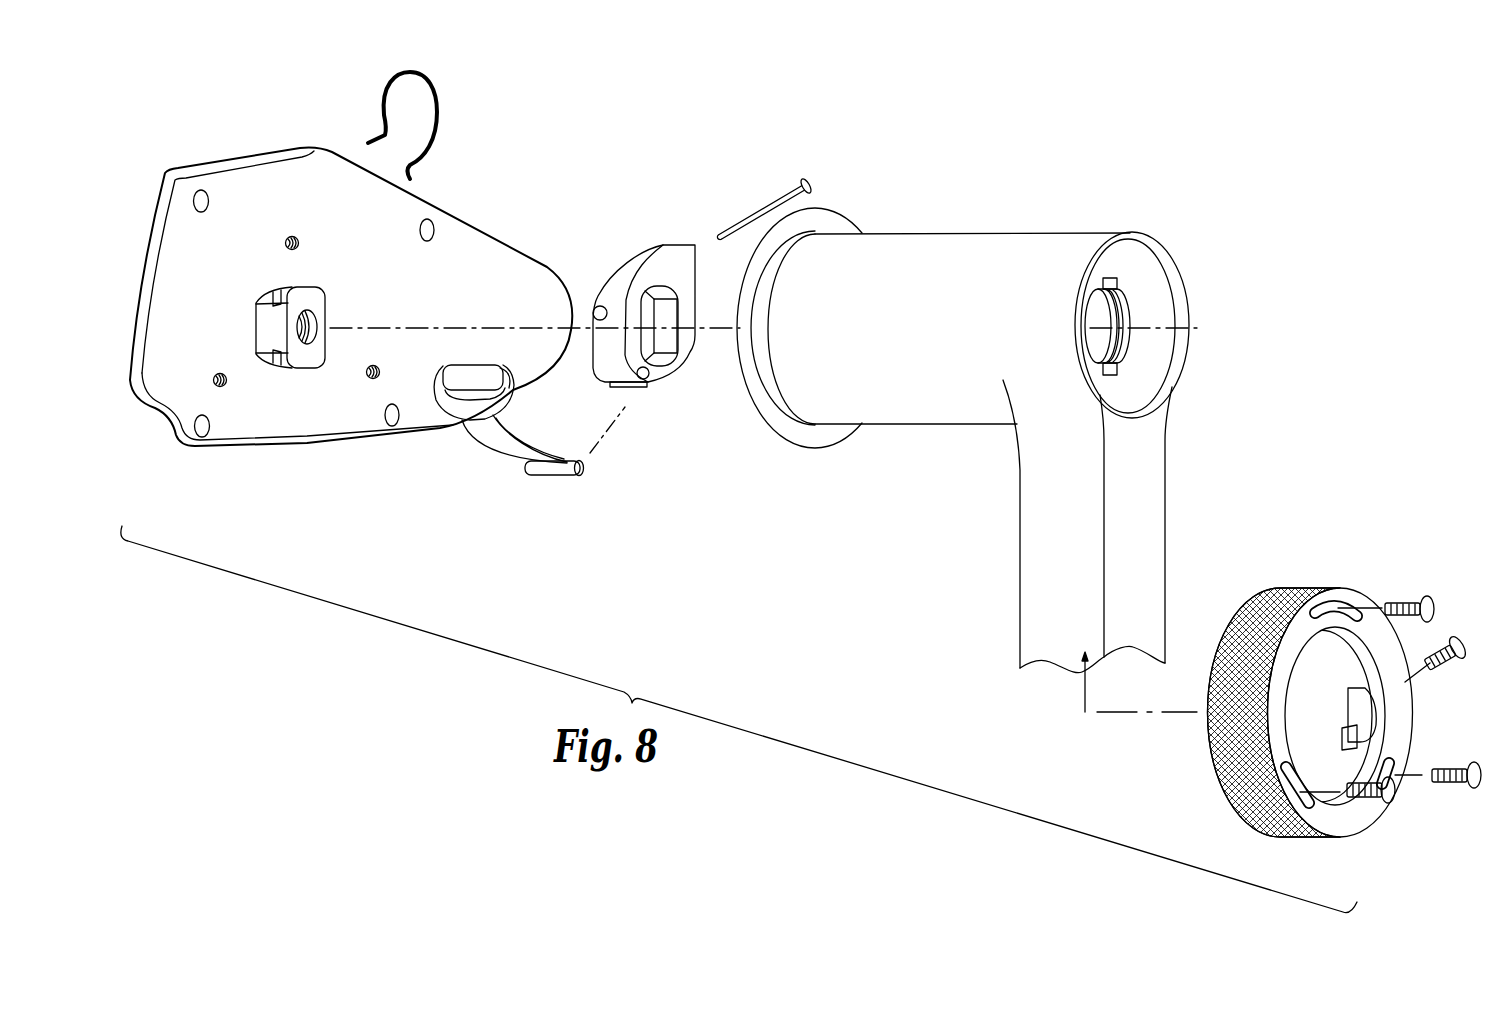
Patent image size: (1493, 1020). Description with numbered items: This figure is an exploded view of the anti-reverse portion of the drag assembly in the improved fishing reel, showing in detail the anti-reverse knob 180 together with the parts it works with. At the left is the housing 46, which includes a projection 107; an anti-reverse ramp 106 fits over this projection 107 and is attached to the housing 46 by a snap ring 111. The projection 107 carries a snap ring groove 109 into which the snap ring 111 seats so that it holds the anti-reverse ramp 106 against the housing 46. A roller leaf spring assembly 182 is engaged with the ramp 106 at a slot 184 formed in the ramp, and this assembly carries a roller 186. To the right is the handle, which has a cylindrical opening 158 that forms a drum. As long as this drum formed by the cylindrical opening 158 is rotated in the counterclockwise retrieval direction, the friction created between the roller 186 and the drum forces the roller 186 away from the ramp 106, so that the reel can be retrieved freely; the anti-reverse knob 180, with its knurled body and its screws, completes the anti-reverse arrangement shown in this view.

The housing 46 is at (527, 292).
The snap ring 111 is at (432, 84).
The projection 107 is at (310, 308).
The snap ring groove 109 is at (281, 290).
The anti-reverse ramp 106 is at (650, 258).
The slot 184 is at (646, 384).
The roller 186 is at (463, 385).
The roller leaf spring assembly 182 is at (490, 443).
The cylindrical opening 158 is at (1118, 303).
The anti-reverse knob 180 is at (1315, 592).